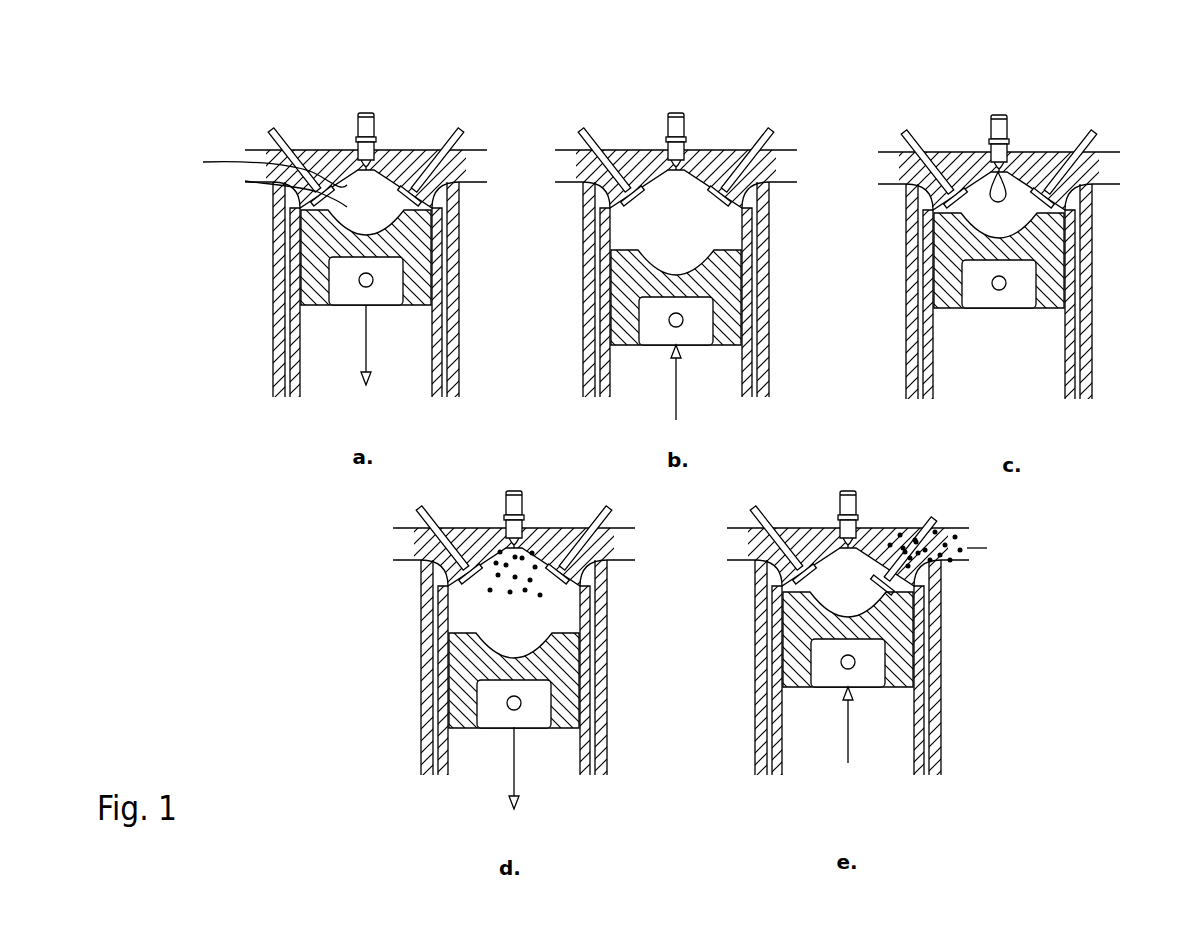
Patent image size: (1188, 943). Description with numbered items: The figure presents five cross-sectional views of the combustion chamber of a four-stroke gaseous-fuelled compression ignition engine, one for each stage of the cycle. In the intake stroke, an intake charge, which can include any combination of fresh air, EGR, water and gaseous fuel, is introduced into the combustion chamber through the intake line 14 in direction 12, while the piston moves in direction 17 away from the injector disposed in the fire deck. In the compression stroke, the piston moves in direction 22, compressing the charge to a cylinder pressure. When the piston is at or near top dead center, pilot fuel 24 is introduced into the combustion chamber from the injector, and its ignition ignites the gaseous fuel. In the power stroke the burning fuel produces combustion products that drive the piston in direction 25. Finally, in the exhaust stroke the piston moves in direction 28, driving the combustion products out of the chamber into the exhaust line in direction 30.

The direction 12 is at (274, 194).
The intake line 14 is at (262, 148).
The direction 17 is at (385, 360).
The direction 22 is at (716, 391).
The pilot fuel 24 is at (972, 135).
The direction 25 is at (483, 785).
The direction 28 is at (878, 757).
The direction 30 is at (988, 558).